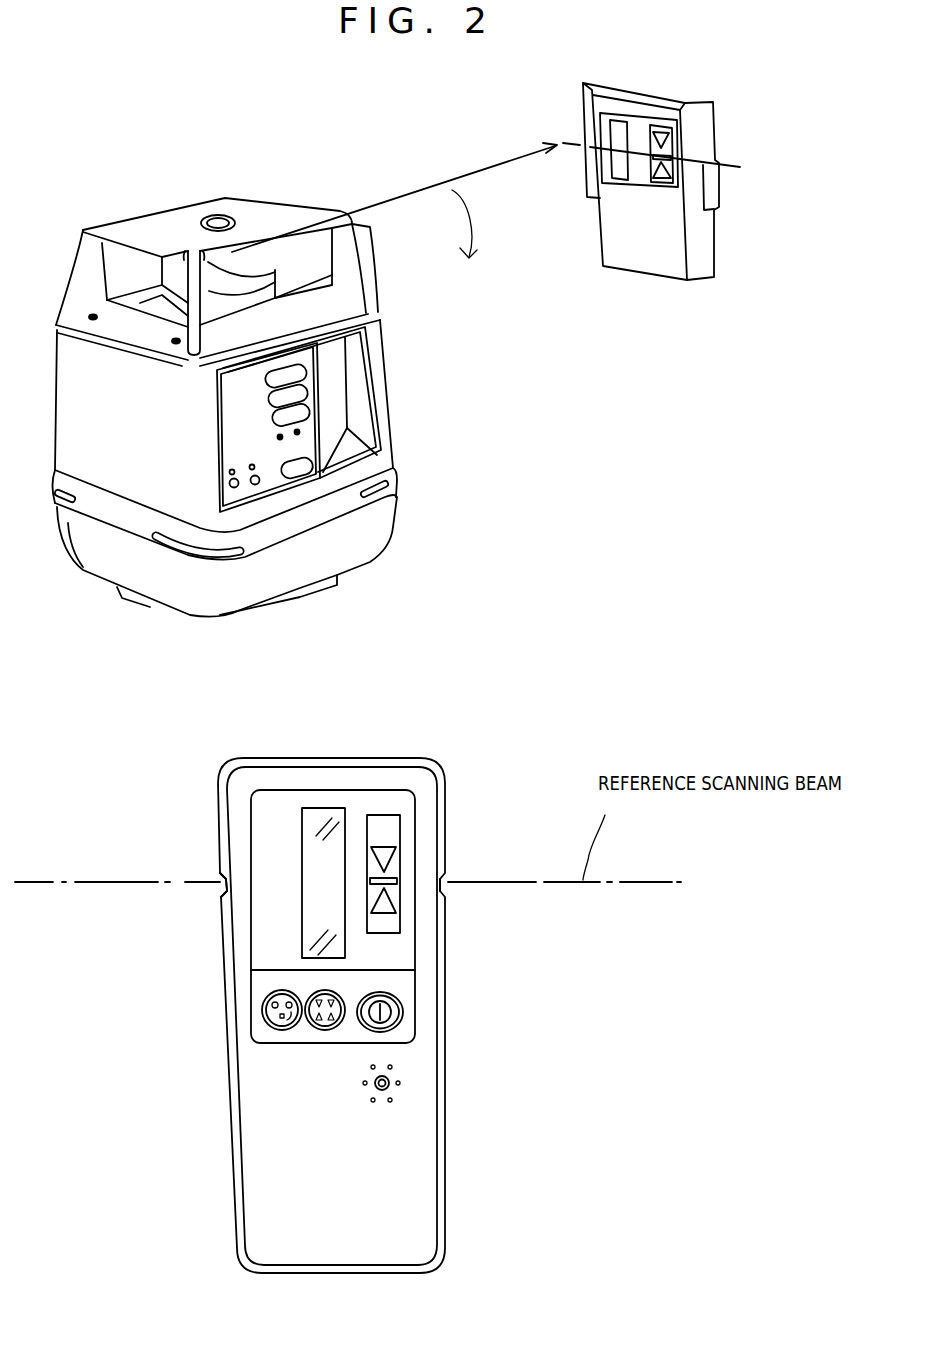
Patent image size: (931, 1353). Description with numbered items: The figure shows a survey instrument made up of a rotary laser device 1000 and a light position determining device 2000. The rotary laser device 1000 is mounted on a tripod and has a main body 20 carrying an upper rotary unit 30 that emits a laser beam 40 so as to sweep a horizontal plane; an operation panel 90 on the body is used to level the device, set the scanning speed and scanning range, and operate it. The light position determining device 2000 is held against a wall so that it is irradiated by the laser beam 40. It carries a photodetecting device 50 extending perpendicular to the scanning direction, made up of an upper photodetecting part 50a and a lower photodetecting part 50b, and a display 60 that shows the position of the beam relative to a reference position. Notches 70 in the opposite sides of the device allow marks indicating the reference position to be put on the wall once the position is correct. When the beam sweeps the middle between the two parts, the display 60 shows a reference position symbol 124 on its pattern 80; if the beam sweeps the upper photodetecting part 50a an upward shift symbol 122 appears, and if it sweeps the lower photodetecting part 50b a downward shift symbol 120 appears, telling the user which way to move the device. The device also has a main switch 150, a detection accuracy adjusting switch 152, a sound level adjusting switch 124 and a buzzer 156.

The rotary laser device 1000 is at (400, 397).
The main body 20 is at (363, 291).
The upper rotary unit 30 is at (257, 255).
The laser beam 40 is at (408, 198).
The operation panel 90 is at (240, 438).
The light position determining device 2000 is at (667, 290).
The photodetecting device 50 is at (310, 832).
The upper photodetecting part 50a is at (327, 870).
The lower photodetecting part 50b is at (323, 908).
The display 60 is at (386, 827).
The notches 70 is at (223, 882).
The pattern 80 is at (428, 892).
The downward shift symbol 120 is at (389, 857).
The upward shift symbol 122 is at (393, 912).
The reference position symbol 124 is at (397, 878).
The main switch 150 is at (402, 1014).
The detection accuracy adjusting switch 152 is at (323, 1023).
The buzzer 156 is at (393, 1092).